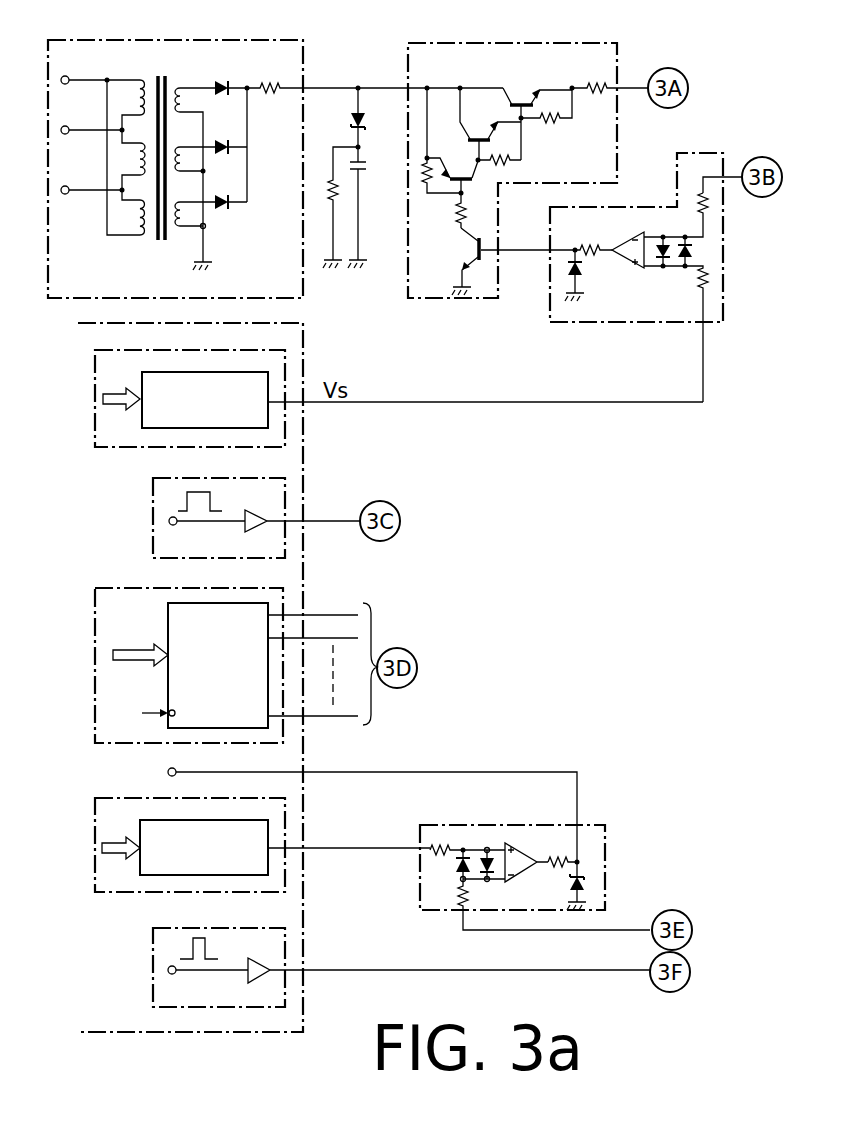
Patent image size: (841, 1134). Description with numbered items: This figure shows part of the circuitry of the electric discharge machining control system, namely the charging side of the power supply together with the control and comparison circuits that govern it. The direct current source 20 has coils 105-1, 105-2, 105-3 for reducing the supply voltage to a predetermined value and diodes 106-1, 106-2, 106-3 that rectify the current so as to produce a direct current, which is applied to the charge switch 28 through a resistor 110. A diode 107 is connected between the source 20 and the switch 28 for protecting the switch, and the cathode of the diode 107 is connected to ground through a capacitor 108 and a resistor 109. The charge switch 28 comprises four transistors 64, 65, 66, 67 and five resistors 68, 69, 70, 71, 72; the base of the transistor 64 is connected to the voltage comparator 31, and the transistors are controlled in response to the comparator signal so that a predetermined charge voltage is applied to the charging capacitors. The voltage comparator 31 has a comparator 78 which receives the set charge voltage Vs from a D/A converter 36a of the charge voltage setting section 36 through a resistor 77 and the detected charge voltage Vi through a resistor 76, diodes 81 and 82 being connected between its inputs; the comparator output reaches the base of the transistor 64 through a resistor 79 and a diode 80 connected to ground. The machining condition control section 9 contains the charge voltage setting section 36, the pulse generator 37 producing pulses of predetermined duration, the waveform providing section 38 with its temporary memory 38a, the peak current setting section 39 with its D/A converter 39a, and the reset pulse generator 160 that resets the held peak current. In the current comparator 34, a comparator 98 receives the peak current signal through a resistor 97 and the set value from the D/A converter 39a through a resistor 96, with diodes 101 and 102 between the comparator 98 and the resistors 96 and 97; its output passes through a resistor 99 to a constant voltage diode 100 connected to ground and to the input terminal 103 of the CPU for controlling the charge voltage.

The direct current source 20 is at (158, 21).
The coil 105-1 is at (134, 96).
The coil 105-2 is at (134, 154).
The coil 105-3 is at (136, 216).
The diode 106-1 is at (214, 82).
The diode 106-2 is at (232, 150).
The diode 106-3 is at (228, 205).
The resistor 110 is at (271, 91).
The diode 107 is at (380, 118).
The resistor 109 is at (330, 170).
The capacitor 108 is at (366, 168).
The resistor 69 is at (418, 178).
The charge switch 28 is at (518, 43).
The transistor 65 is at (456, 170).
The transistor 66 is at (484, 138).
The transistor 67 is at (522, 100).
The resistor 72 is at (597, 91).
The resistor 71 is at (551, 120).
The resistor 70 is at (508, 162).
The resistor 68 is at (454, 214).
The transistor 64 is at (474, 250).
The voltage comparator 31 is at (632, 322).
The resistor 79 is at (594, 224).
The diode 80 is at (582, 270).
The comparator 78 is at (628, 262).
The diode 81 is at (654, 232).
The diode 82 is at (684, 250).
The resistor 76 is at (711, 212).
The resistor 77 is at (696, 285).
The machining condition control section 9 is at (305, 350).
The charge voltage setting section 36 is at (95, 378).
The D/A converter 36a is at (150, 428).
The pulse generator 37 is at (153, 500).
The waveform providing section 38 is at (121, 570).
The temporary memory 38a is at (168, 687).
The input terminal 103 is at (168, 771).
The peak current setting section 39 is at (95, 818).
The D/A converter 39a is at (145, 875).
The reset pulse generator 160 is at (153, 992).
The current comparator 34 is at (606, 838).
The resistor 96 is at (436, 844).
The diode 101 is at (456, 862).
The diode 102 is at (480, 840).
The comparator 98 is at (514, 875).
The resistor 99 is at (562, 858).
The resistor 97 is at (457, 906).
The constant voltage diode 100 is at (586, 884).